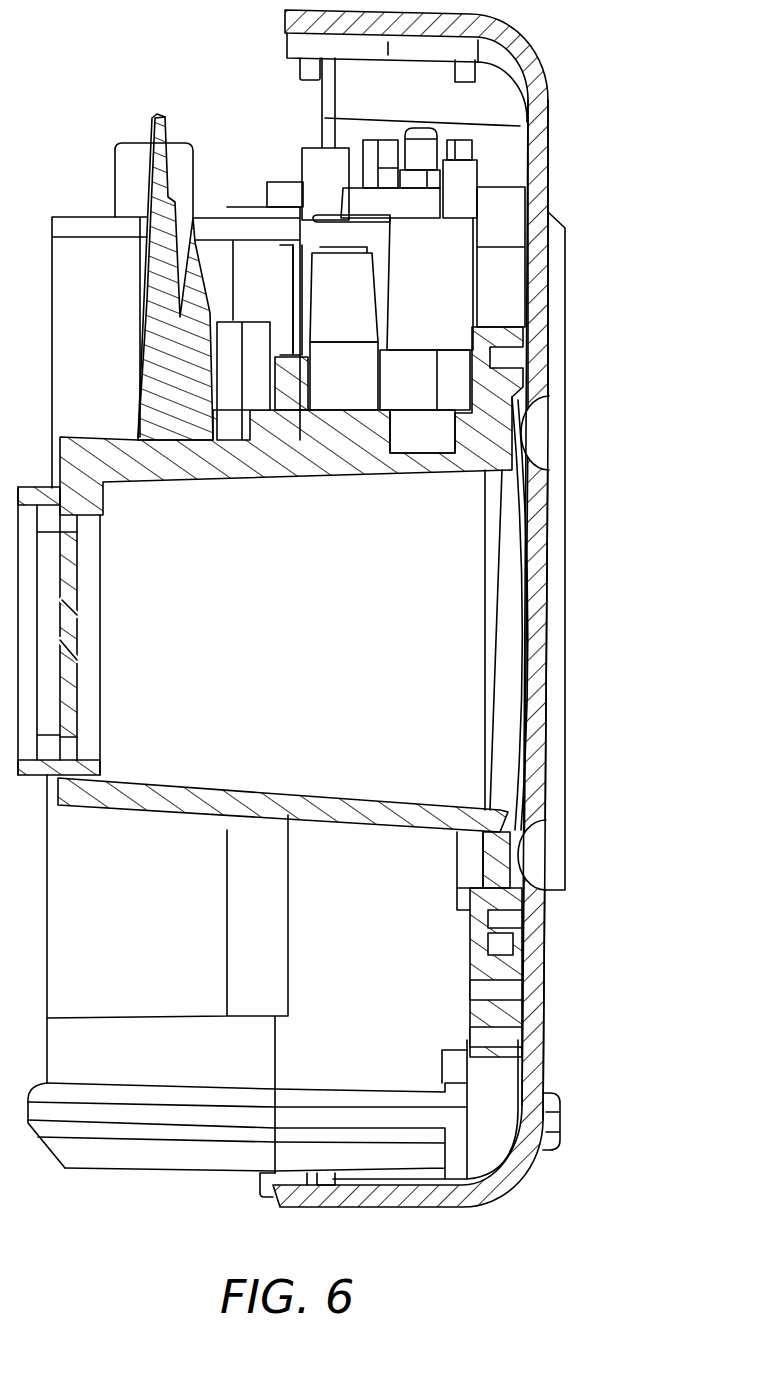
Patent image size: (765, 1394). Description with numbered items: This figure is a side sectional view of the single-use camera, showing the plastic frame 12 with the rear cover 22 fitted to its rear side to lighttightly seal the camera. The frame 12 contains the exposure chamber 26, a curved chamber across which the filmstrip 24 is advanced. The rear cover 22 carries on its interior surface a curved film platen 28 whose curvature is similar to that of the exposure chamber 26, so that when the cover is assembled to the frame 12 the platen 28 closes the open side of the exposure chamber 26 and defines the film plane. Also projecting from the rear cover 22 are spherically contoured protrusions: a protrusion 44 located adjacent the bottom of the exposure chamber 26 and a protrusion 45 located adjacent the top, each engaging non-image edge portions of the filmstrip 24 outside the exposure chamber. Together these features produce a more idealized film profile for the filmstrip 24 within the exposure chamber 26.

The frame 12 is at (156, 233).
The rear cover 22 is at (538, 286).
The filmstrip 24 is at (536, 573).
The exposure chamber 26 is at (148, 773).
The curved film platen 28 is at (540, 503).
The protrusion 44 is at (530, 857).
The protrusion 45 is at (537, 425).